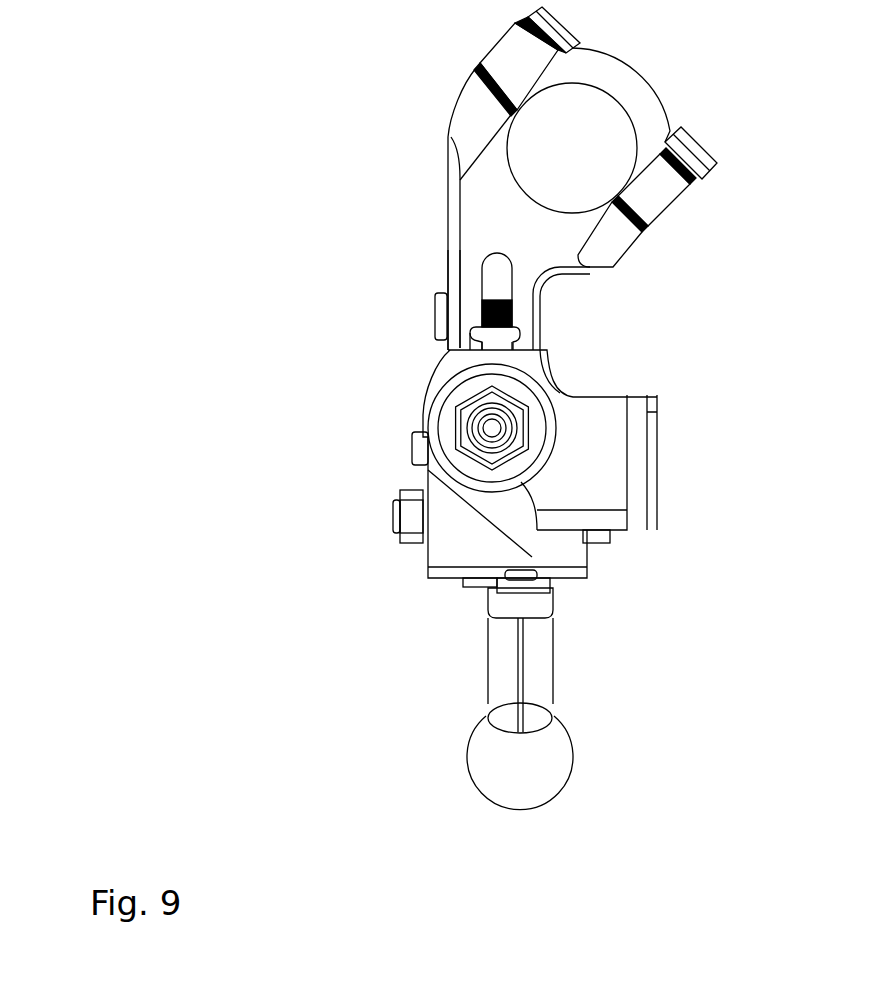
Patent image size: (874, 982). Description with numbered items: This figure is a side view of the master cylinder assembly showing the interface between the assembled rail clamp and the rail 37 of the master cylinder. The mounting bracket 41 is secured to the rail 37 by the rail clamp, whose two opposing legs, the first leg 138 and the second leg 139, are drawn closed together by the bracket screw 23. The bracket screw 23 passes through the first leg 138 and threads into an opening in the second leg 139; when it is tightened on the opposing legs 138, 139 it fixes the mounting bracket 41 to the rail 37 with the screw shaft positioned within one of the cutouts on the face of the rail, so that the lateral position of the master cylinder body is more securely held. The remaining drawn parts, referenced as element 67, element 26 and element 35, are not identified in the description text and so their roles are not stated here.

The handlebar clamp 67 is at (632, 87).
The mounting bracket 41 is at (458, 103).
The first leg 138 is at (457, 287).
The bracket screw 23 is at (442, 318).
The pin 26 is at (485, 300).
The second leg 139 is at (540, 310).
The bracket 35 is at (520, 325).
The rail 37 is at (497, 337).